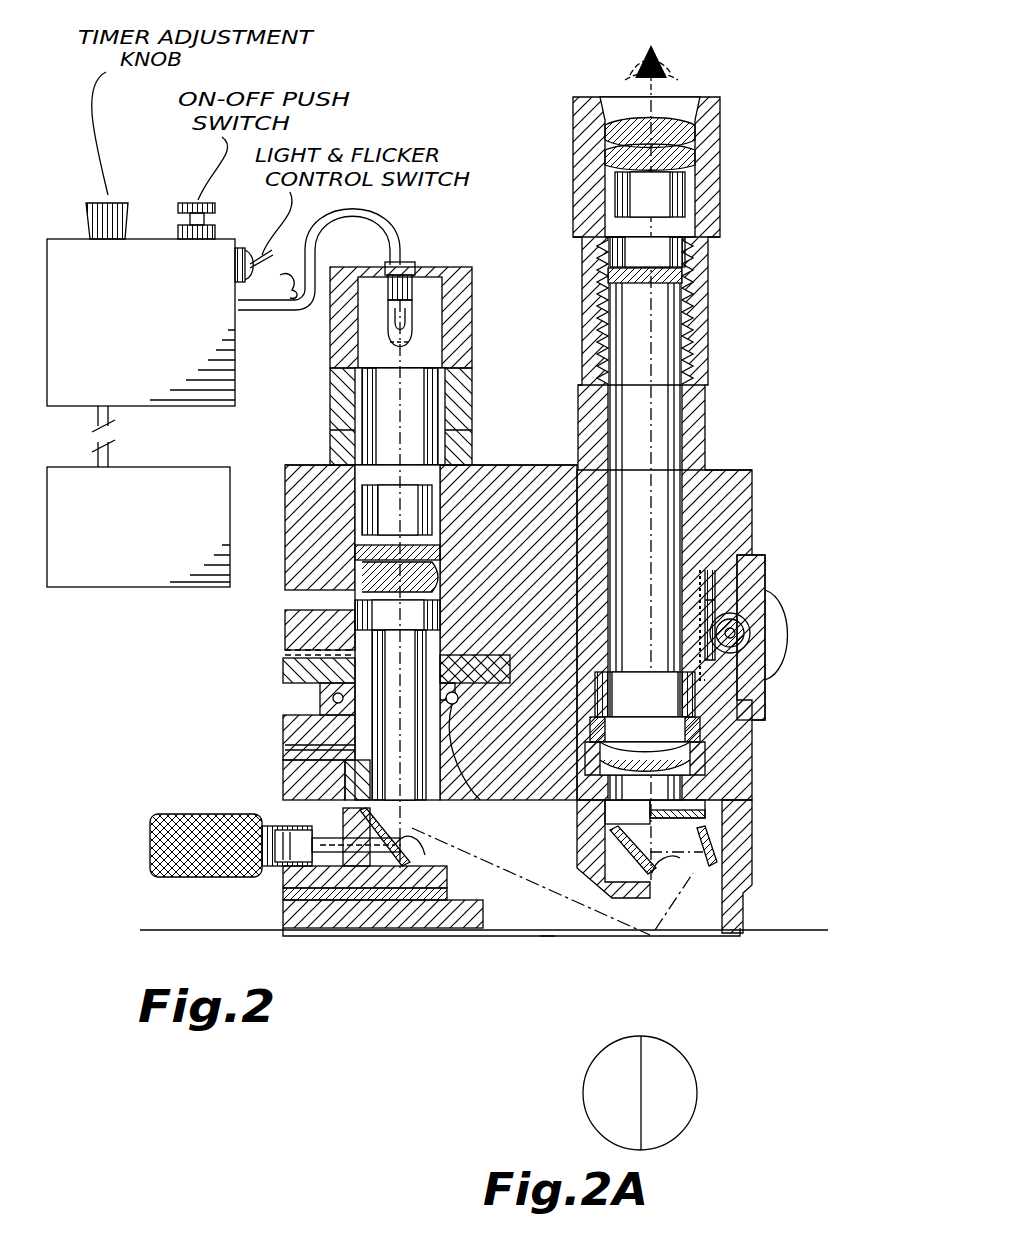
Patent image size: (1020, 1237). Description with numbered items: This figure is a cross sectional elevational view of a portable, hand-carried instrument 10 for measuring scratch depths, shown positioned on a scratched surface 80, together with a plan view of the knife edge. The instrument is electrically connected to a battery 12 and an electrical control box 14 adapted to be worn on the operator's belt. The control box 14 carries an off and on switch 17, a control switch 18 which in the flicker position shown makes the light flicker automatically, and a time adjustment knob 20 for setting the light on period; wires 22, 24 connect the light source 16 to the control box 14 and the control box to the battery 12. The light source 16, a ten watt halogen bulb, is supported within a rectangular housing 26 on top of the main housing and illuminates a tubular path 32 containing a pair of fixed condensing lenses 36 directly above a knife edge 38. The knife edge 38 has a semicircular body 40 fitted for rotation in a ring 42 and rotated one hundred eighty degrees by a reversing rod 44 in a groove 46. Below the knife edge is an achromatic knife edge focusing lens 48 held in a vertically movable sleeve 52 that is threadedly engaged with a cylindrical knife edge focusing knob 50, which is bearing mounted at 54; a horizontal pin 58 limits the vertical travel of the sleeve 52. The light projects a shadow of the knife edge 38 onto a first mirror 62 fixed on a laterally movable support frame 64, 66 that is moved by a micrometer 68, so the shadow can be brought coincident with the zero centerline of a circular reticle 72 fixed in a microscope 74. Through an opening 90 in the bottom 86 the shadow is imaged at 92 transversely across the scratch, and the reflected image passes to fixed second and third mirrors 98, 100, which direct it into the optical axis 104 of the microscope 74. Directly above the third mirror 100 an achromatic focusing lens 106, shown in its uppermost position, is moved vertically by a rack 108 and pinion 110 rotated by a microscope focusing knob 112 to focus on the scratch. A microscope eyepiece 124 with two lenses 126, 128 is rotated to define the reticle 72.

In FIG. 2, the instrument 10 is at (457, 955).
In FIG. 2, the battery 12 is at (100, 590).
In FIG. 2, the electrical control box 14 is at (55, 238).
In FIG. 2, the light source 16 is at (412, 325).
In FIG. 2, the off and on switch 17 is at (212, 204).
In FIG. 2, the control switch 18 is at (268, 258).
In FIG. 2, the time adjustment knob 20 is at (106, 202).
In FIG. 2, the wire 22 is at (305, 310).
In FIG. 2, the wire 24 is at (110, 448).
In FIG. 2, the rectangular housing 26 is at (473, 345).
In FIG. 2, the tubular path 32 is at (372, 510).
In FIG. 2, the fixed condensing lenses 36 is at (358, 610).
In FIG. 2, the knife edge 38 is at (348, 640).
In FIG. 2A, the knife edge 38 is at (641, 1118).
In FIG. 2A, the semicircular body 40 is at (692, 1110).
In FIG. 2, the ring 42 is at (362, 580).
In FIG. 2, the reversing rod 44 is at (340, 650).
In FIG. 2, the groove 46 is at (340, 598).
In FIG. 2, the achromatic knife edge focusing lens 48 is at (400, 775).
In FIG. 2, the knife edge focusing knob 50 is at (322, 690).
In FIG. 2, the sleeve 52 is at (350, 770).
In FIG. 2, the bearing mount 54 is at (470, 800).
In FIG. 2, the horizontal pin 58 is at (292, 770).
In FIG. 2, the first mirror 62 is at (425, 905).
In FIG. 2, the support frame 64 is at (390, 890).
In FIG. 2, the support frame 66 is at (340, 888).
In FIG. 2, the micrometer 68 is at (285, 872).
In FIG. 2, the circular reticle 72 is at (680, 290).
In FIG. 2, the microscope 74 is at (708, 410).
In FIG. 2, the scratched surface 80 is at (795, 929).
In FIG. 2, the bottom 86 is at (470, 935).
In FIG. 2, the opening 90 is at (548, 935).
In FIG. 2, the knife edge shadow image 92 is at (592, 935).
In FIG. 2, the second mirror 98 is at (735, 840).
In FIG. 2, the third mirror 100 is at (697, 870).
In FIG. 2, the optical axis 104 is at (650, 455).
In FIG. 2, the achromatic focusing lens 106 is at (672, 760).
In FIG. 2, the rack 108 is at (715, 580).
In FIG. 2, the pinion 110 is at (745, 622).
In FIG. 2, the microscope focusing knob 112 is at (778, 650).
In FIG. 2, the microscope eyepiece 124 is at (718, 167).
In FIG. 2, the eyepiece lens 126 is at (690, 130).
In FIG. 2, the eyepiece lens 128 is at (690, 185).